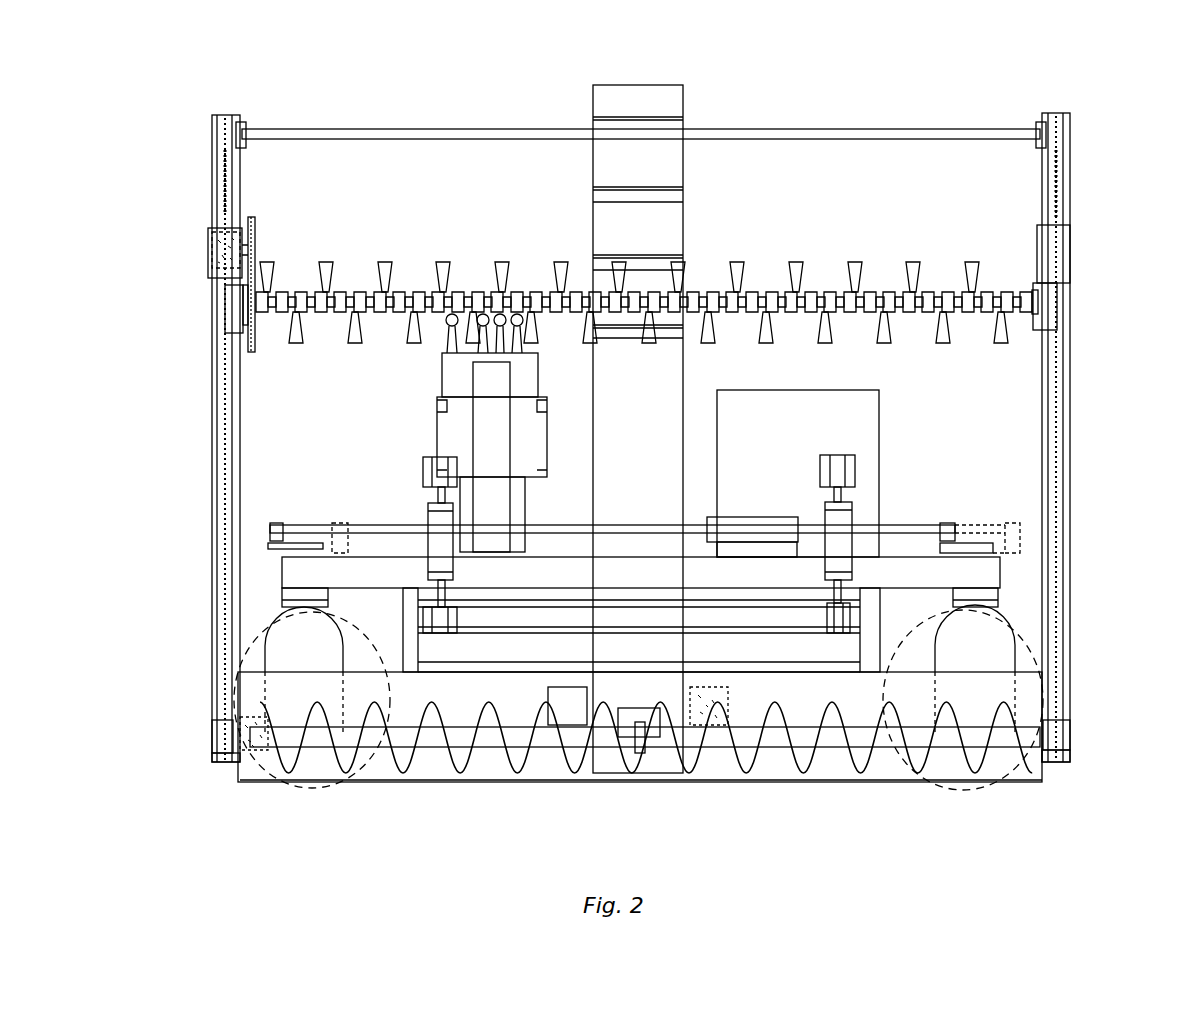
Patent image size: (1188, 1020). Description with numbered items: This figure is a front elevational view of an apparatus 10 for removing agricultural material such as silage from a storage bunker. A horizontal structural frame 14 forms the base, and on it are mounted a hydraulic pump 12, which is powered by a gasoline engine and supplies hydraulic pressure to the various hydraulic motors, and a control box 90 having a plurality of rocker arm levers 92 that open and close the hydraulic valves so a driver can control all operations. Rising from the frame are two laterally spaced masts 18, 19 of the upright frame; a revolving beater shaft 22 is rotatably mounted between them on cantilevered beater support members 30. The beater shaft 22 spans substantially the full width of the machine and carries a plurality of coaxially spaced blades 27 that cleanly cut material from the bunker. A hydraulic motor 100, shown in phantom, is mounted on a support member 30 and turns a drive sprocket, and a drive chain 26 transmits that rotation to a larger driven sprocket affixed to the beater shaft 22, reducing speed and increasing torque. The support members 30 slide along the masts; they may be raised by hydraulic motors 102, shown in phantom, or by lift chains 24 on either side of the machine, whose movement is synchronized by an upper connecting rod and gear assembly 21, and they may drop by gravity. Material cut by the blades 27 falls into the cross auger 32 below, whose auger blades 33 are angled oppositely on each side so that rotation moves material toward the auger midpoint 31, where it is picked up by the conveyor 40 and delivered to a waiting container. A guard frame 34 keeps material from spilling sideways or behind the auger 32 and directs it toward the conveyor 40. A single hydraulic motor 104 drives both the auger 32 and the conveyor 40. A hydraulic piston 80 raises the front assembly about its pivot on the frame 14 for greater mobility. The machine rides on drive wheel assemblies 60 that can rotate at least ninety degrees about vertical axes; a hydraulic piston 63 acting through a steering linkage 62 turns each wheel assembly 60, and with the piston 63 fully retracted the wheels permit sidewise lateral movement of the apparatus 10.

The apparatus 10 is at (1088, 570).
The hydraulic pump 12 is at (838, 418).
The horizontal structural frame 14 is at (290, 572).
The mast 18 is at (222, 368).
The mast 19 is at (1062, 375).
The upper connecting rod and gear assembly 21 is at (795, 130).
The revolving beater shaft 22 is at (808, 285).
The lift chains 24 is at (222, 183).
The drive chain 26 is at (255, 255).
The blades 27 is at (908, 263).
The beater support members 30 is at (207, 275).
The auger midpoint 31 is at (640, 755).
The cross auger 32 is at (645, 770).
The auger blades 33 is at (512, 755).
The guard frame 34 is at (405, 783).
The conveyor 40 is at (668, 103).
The drive wheel assembly 60 is at (290, 648).
The steering linkage 62 is at (355, 525).
The hydraulic piston 63 is at (778, 520).
The hydraulic piston 80 is at (428, 545).
The control box 90 is at (455, 384).
The rocker arm levers 92 is at (520, 312).
The hydraulic motor 100 is at (205, 245).
The hydraulic motor 102 is at (240, 718).
The hydraulic motor 104 is at (572, 705).